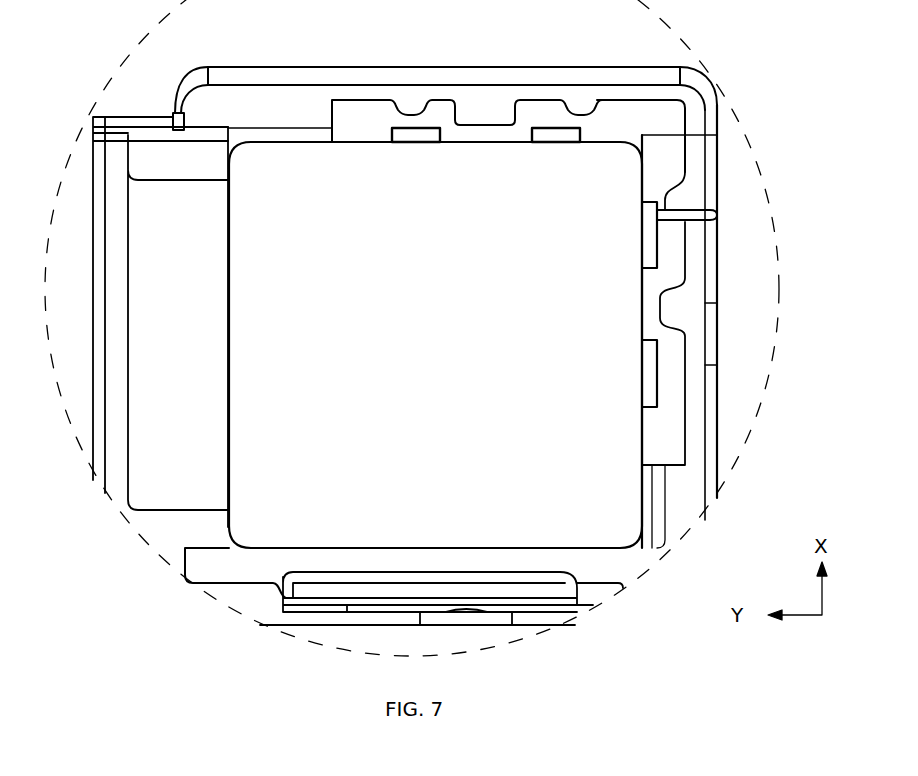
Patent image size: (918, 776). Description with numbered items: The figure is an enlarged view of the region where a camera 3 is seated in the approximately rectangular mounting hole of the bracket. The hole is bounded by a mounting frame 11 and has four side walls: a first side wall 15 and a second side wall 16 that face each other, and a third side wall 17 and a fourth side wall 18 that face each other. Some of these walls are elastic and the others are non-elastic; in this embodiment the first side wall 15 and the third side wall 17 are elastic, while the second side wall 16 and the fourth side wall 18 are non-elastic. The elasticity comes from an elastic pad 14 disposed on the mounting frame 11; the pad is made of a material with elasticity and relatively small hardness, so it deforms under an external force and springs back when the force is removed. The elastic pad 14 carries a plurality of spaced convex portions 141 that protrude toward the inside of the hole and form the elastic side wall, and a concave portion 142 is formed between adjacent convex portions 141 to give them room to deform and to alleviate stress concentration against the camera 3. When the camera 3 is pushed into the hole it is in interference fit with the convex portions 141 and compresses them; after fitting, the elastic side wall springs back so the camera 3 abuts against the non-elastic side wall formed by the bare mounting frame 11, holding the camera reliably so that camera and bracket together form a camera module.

The mounting frame 11 is at (173, 73).
The first side wall 15 is at (313, 97).
The elastic pad 14 is at (367, 107).
The convex portion 141 is at (465, 137).
The concave portion 142 is at (557, 137).
The camera 3 is at (631, 325).
The third side wall 17 is at (675, 483).
The fourth side wall 18 is at (227, 523).
The second side wall 16 is at (577, 558).